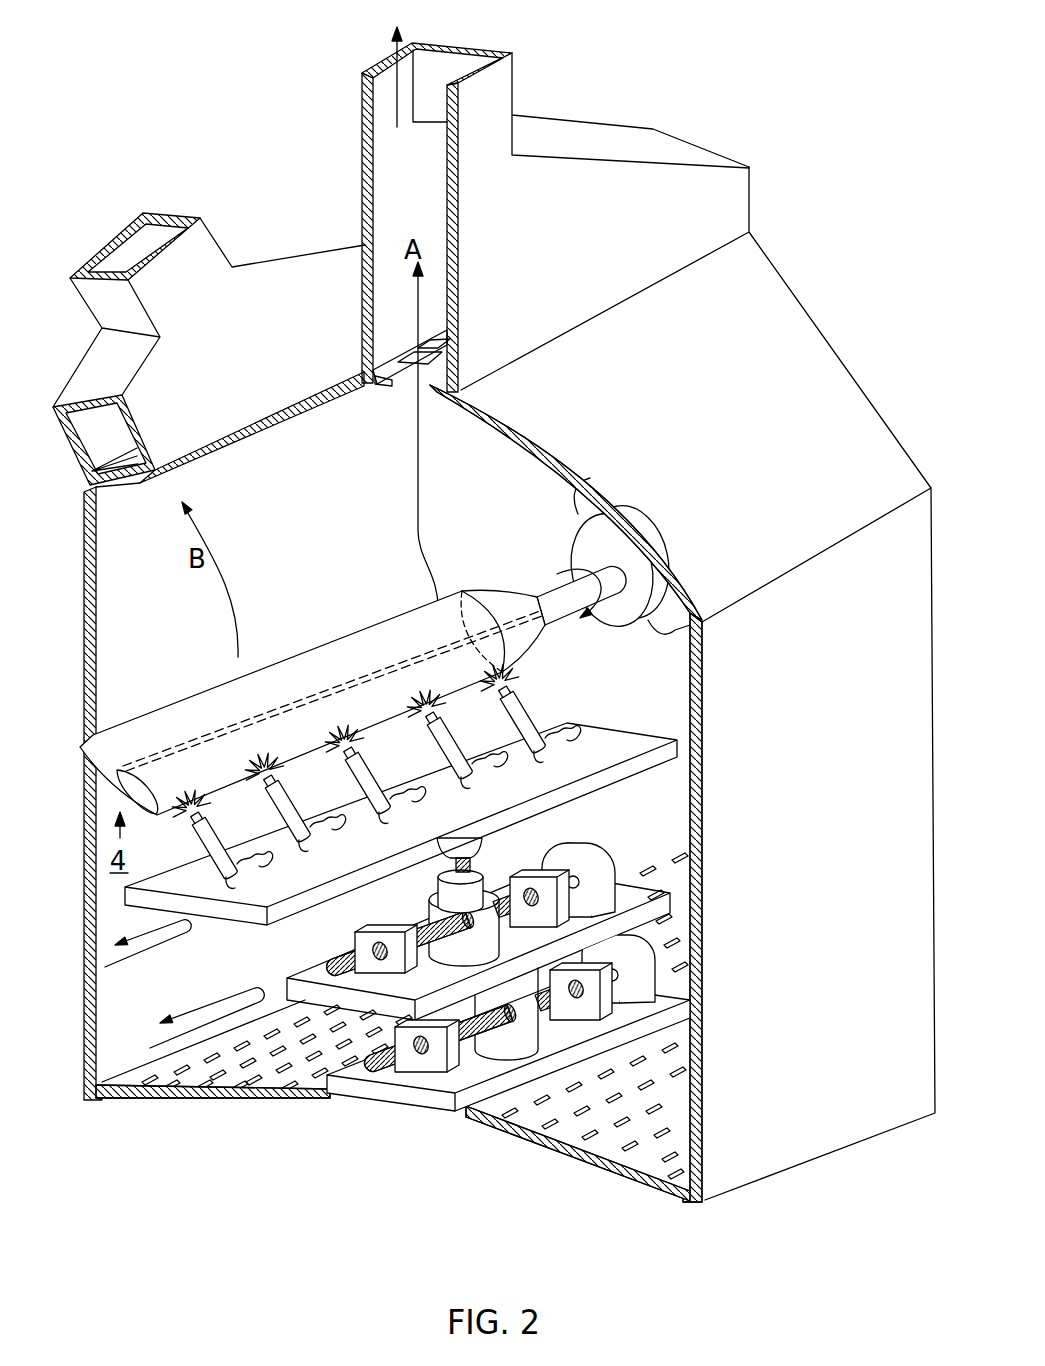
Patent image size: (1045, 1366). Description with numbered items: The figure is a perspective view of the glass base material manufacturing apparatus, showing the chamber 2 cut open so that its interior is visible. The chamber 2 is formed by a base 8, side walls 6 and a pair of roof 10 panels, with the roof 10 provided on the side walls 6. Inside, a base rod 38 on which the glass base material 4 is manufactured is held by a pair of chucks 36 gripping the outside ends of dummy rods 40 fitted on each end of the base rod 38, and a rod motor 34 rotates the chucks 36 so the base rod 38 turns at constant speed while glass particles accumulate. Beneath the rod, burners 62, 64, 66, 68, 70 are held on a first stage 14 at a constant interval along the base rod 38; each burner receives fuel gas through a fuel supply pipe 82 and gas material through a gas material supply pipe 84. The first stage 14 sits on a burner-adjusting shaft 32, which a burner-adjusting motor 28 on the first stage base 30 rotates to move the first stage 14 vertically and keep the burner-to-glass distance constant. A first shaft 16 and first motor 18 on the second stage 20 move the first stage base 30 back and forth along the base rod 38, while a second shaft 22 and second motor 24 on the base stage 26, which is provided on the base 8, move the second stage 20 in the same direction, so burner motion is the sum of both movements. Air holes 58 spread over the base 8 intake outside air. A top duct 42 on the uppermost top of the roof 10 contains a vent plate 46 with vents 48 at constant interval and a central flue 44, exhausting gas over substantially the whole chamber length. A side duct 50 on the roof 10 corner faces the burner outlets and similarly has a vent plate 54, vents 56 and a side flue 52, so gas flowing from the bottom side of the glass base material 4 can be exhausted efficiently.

The chamber 2 is at (795, 256).
The glass base material 4 is at (150, 717).
The side walls 6 is at (835, 1148).
The base 8 is at (632, 1173).
The roof 10 is at (826, 350).
The first stage 14 is at (592, 730).
The first shaft 16 is at (327, 962).
The first motor 18 is at (590, 847).
The second stage 20 is at (617, 893).
The second shaft 22 is at (362, 1095).
The second motor 24 is at (687, 928).
The base stage 26 is at (685, 1013).
The burner-adjusting motor 28 is at (474, 866).
The first stage base 30 is at (427, 913).
The burner-adjusting shaft 32 is at (472, 852).
The rod motor 34 is at (673, 627).
The chucks 36 is at (634, 527).
The base rod 38 is at (85, 823).
The dummy rods 40 is at (573, 547).
The top duct 42 is at (364, 297).
The flue 44 is at (503, 83).
The vent plate 46 is at (387, 388).
The vents 48 is at (442, 345).
The side duct 50 is at (112, 422).
The side flue 52 is at (210, 245).
The vent plate 54 is at (105, 486).
The vents 56 is at (133, 458).
The air holes 58 is at (540, 1127).
The burner 62 is at (213, 833).
The burner 64 is at (282, 793).
The burner 66 is at (366, 760).
The burner 68 is at (445, 735).
The burner 70 is at (515, 705).
The fuel supply pipe 82 is at (236, 868).
The gas material supply pipe 84 is at (238, 888).